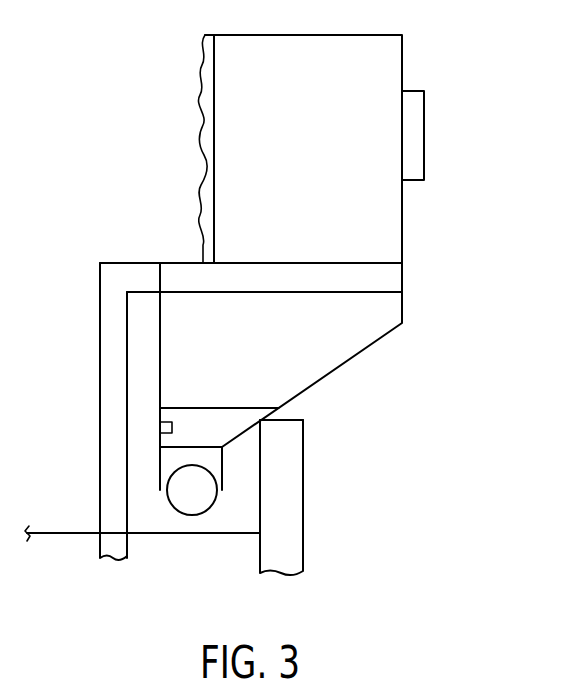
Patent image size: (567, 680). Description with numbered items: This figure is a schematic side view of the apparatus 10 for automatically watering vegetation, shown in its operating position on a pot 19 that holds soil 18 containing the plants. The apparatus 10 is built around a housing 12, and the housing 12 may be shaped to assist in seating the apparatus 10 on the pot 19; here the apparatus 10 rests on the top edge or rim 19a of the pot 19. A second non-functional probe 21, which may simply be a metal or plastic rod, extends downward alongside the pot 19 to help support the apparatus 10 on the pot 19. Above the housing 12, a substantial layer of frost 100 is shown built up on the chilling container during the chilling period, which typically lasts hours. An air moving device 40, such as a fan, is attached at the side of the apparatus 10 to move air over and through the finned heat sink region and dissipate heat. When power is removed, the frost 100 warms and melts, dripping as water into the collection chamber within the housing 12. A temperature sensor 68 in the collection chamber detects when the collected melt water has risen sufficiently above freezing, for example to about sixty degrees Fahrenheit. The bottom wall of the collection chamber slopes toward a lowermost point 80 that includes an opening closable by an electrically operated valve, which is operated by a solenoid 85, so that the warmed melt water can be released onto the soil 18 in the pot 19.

The apparatus 10 is at (455, 53).
The layer of frost 100 is at (205, 147).
The air moving device 40 is at (417, 135).
The housing 12 is at (392, 243).
The second non-functional probe 21 is at (112, 342).
The temperature sensor 68 is at (162, 427).
The lowermost point 80 is at (168, 492).
The solenoid 85 is at (192, 507).
The soil 18 is at (67, 532).
The pot 19 is at (295, 508).
The rim 19a is at (295, 417).